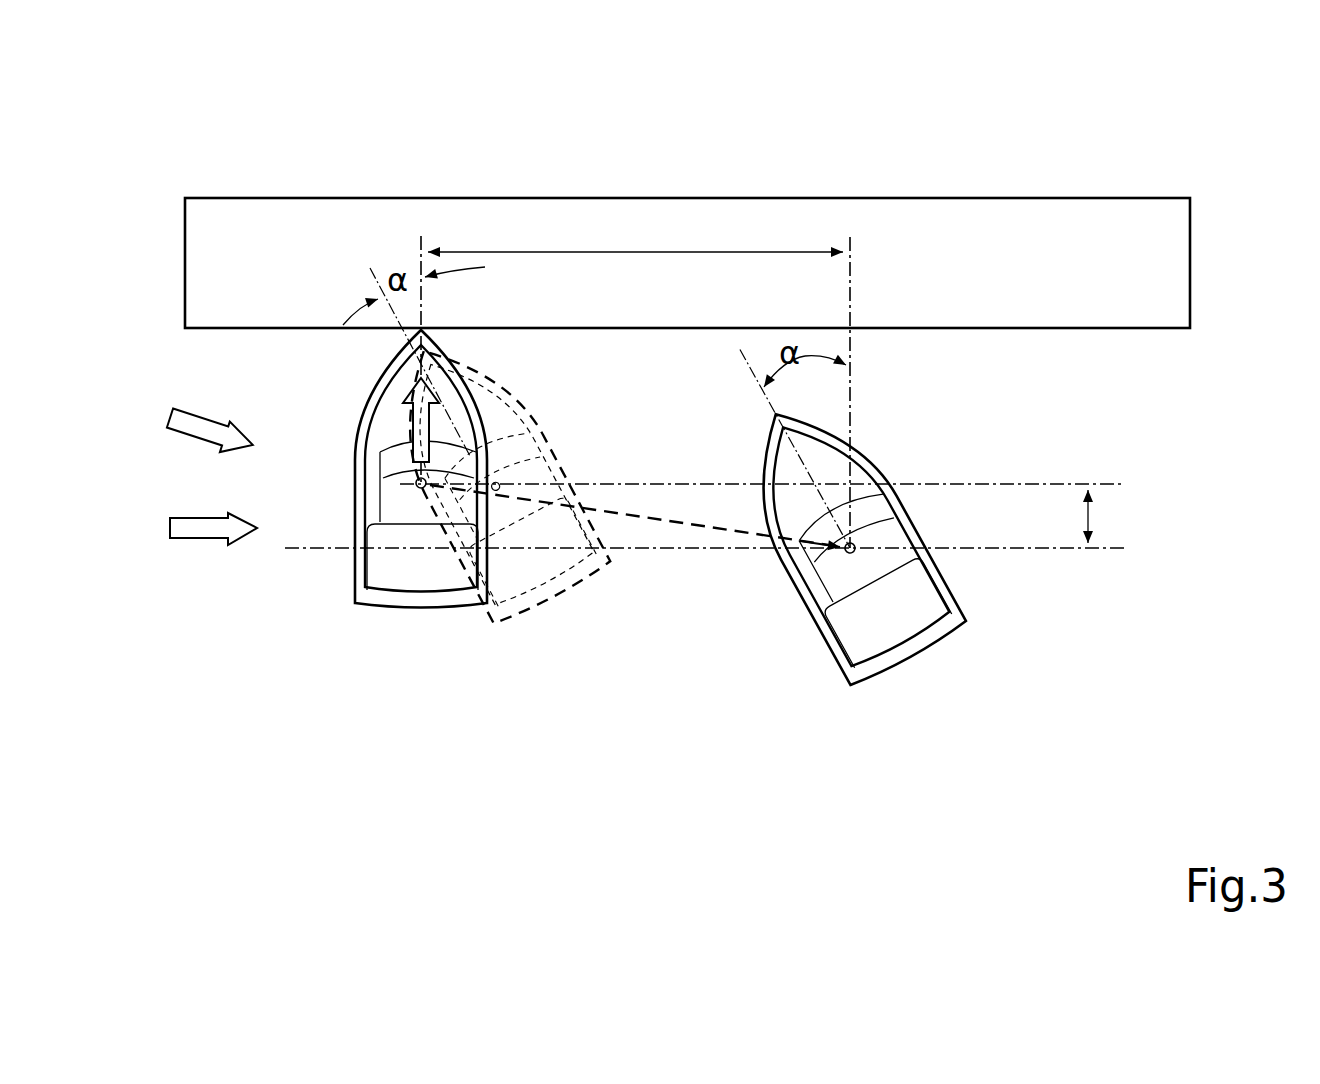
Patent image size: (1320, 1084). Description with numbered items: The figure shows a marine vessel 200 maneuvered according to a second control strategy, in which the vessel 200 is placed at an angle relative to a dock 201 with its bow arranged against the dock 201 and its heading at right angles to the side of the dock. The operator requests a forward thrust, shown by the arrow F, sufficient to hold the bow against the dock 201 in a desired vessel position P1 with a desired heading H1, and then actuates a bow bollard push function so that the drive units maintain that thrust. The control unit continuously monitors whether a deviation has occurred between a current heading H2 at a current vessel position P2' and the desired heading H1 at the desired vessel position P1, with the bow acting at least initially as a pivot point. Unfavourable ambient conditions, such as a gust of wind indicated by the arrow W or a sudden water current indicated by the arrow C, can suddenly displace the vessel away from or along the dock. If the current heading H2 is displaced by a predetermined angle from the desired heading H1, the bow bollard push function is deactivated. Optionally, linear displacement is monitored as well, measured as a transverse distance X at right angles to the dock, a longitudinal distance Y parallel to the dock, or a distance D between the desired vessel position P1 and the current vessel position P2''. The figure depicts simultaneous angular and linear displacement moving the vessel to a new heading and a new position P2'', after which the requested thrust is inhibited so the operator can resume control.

The vessel 200 is at (358, 608).
The dock 201 is at (345, 230).
The arrow W (gust of wind) W is at (189, 411).
The arrow C (water current) C is at (213, 555).
The arrow F (forward thrust direction) F is at (428, 362).
The desired heading H1 is at (423, 240).
The current heading H2 is at (376, 272).
The longitudinal distance Y is at (635, 234).
The transverse distance X is at (1104, 516).
The distance D is at (683, 532).
The desired vessel position P1 is at (423, 500).
The current vessel position P2' is at (539, 623).
The new vessel position P2'' is at (888, 675).